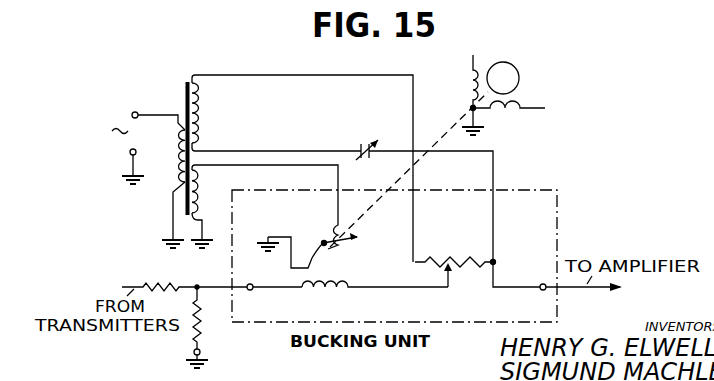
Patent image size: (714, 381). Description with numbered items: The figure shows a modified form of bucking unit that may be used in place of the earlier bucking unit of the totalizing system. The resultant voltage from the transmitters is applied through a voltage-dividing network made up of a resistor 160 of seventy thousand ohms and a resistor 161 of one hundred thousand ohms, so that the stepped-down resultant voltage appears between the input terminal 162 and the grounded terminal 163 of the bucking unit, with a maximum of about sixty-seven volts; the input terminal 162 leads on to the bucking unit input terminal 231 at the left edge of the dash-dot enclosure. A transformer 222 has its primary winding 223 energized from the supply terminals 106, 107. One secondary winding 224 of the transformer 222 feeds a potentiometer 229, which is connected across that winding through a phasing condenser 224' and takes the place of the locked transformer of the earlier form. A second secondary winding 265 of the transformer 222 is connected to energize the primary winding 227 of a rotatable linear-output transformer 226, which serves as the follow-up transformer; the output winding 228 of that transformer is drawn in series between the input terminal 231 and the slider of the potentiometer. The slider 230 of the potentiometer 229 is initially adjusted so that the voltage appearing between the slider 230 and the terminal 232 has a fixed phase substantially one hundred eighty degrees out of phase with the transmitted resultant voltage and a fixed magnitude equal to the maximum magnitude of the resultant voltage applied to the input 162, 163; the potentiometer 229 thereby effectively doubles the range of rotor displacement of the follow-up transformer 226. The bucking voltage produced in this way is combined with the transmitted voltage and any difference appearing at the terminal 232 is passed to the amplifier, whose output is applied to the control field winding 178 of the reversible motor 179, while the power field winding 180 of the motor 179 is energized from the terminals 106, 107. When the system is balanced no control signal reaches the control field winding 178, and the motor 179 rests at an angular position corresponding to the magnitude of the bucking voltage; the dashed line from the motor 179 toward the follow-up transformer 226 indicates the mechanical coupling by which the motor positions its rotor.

The terminal 106 is at (137, 112).
The terminal 107 is at (150, 144).
The resistor 160 is at (164, 282).
The resistor 161 is at (199, 326).
The terminal 162 is at (197, 284).
The grounded terminal 163 is at (186, 359).
The control field winding 178 is at (508, 113).
The reversible motor 179 is at (520, 80).
The power field winding 180 is at (473, 84).
The transformer 222 is at (172, 79).
The primary winding 223 is at (172, 170).
The secondary winding 224 is at (302, 168).
The phasing condenser 224' is at (413, 187).
The second secondary winding 265 is at (206, 186).
The rotatable linear-output transformer 226 is at (343, 256).
The primary winding 227 is at (318, 240).
The bucking coil 228 is at (330, 290).
The potentiometer 229 is at (463, 262).
The slider 230 is at (448, 280).
The bucking unit input terminal 231 is at (255, 290).
The terminal 232 is at (540, 289).